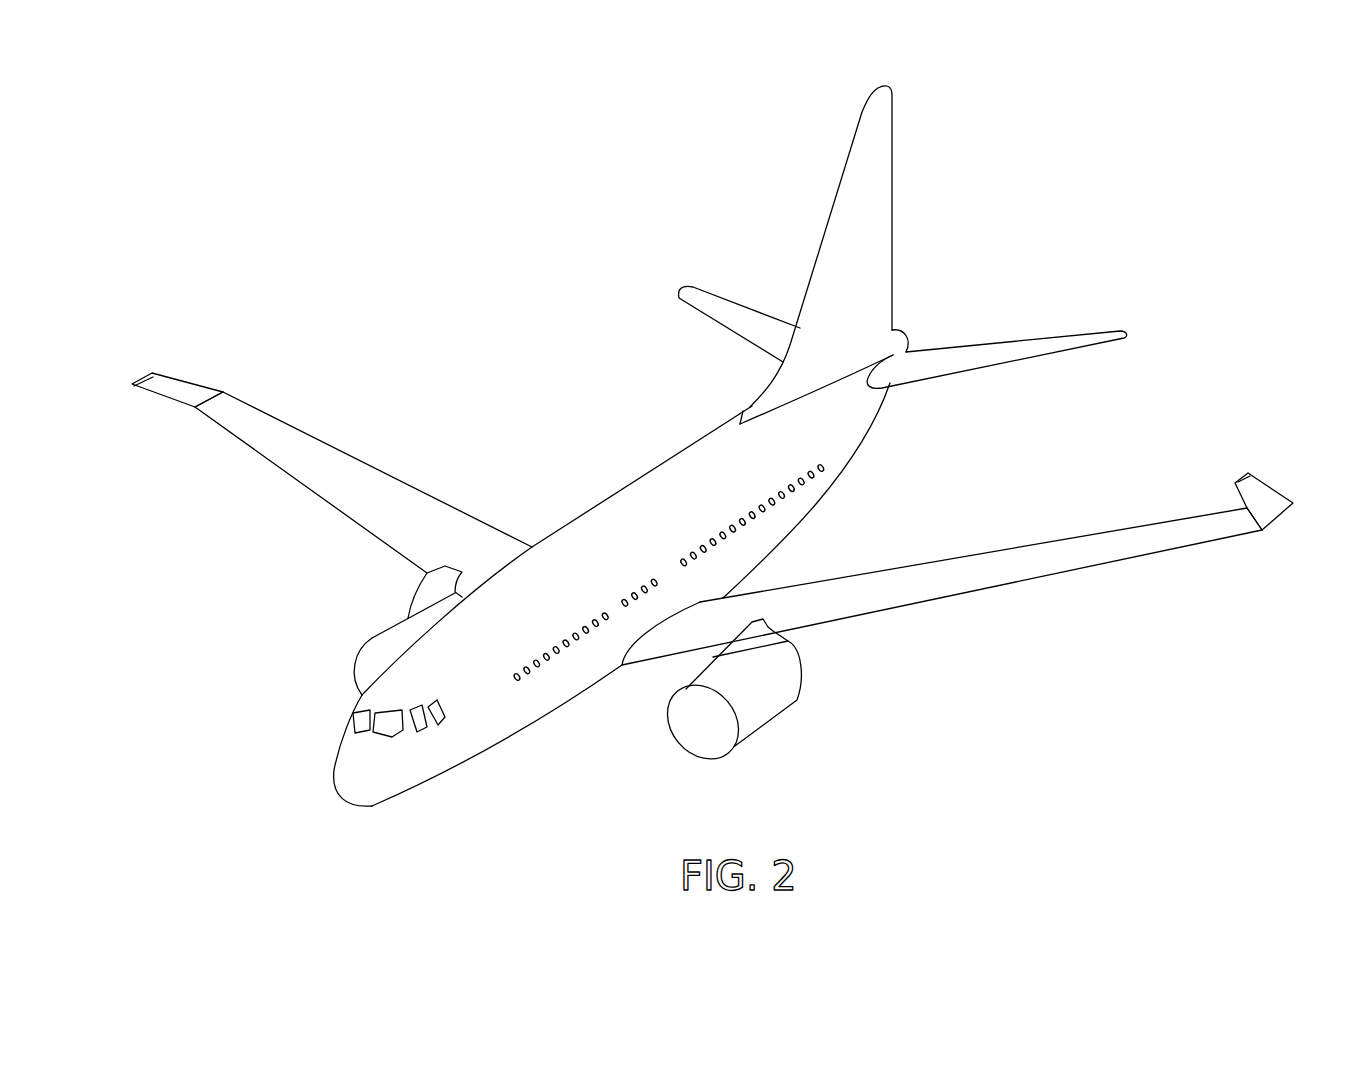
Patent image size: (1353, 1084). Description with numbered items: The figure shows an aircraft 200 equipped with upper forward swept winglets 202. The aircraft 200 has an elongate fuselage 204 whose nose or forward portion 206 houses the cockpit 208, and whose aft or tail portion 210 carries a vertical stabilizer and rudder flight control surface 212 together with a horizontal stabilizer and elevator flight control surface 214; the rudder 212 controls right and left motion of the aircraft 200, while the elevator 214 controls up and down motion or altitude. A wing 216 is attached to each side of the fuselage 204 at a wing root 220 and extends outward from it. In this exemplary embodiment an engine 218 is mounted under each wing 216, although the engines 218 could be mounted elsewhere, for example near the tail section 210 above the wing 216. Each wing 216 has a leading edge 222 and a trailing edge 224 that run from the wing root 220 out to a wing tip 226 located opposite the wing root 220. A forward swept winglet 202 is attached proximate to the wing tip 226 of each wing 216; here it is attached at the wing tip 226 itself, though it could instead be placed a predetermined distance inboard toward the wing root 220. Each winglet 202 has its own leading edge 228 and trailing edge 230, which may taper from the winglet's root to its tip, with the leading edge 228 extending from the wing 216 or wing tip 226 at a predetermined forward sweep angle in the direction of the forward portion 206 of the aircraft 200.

The aircraft 200 is at (717, 465).
The forward swept winglet 202 is at (717, 461).
The elongate fuselage 204 is at (647, 468).
The nose or forward portion 206 is at (433, 783).
The cockpit 208 is at (322, 706).
The aft or tail portion 210 is at (895, 256).
The vertical stabilizer and rudder flight control surface 212 is at (895, 170).
The horizontal stabilizer and elevator flight control surface 214 is at (725, 327).
The wing 216 is at (363, 465).
The engine 218 is at (372, 638).
The wing root 220 is at (672, 623).
The leading edge 222 is at (333, 506).
The trailing edge 224 is at (442, 500).
The wing tip 226 is at (666, 515).
The leading edge 228 is at (157, 398).
The trailing edge 230 is at (207, 387).